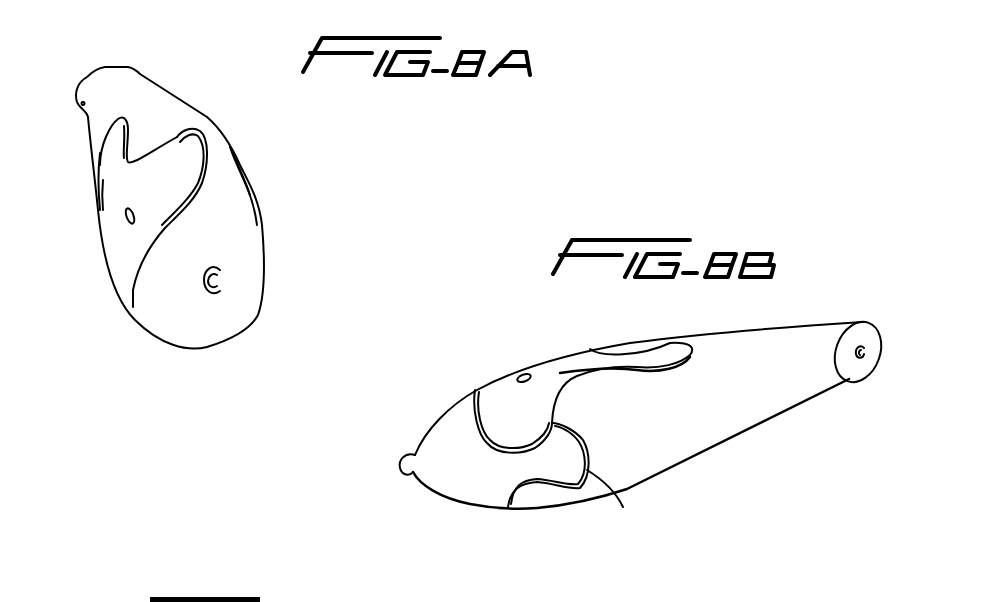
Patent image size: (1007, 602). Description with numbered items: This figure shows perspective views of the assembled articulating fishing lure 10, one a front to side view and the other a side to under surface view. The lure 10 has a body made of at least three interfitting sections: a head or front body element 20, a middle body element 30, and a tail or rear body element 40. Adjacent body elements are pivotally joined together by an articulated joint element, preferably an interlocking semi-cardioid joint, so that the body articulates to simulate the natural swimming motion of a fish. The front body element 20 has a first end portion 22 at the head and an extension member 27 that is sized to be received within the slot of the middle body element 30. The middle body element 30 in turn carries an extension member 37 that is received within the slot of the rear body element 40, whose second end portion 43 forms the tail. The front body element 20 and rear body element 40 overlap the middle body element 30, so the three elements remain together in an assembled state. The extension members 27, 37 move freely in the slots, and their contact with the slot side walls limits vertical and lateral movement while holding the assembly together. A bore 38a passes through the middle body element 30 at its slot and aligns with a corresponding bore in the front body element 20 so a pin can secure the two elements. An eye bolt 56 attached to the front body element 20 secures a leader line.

In FIG. 8B, the articulating fishing lure 10 is at (460, 373).
In FIG. 8A, the front body element 20 is at (203, 335).
In FIG. 8B, the first end portion 22 is at (430, 487).
In FIG. 8A, the extension member 27 is at (215, 143).
In FIG. 8B, the extension member 27 is at (575, 463).
In FIG. 8A, the middle body element 30 is at (247, 183).
In FIG. 8B, the middle body element 30 is at (565, 367).
In FIG. 8A, the extension member 37 is at (110, 155).
In FIG. 8B, the extension member 37 is at (673, 347).
In FIG. 8A, the bore 38a is at (127, 225).
In FIG. 8B, the bore 38a is at (519, 373).
In FIG. 8A, the rear body element 40 is at (167, 100).
In FIG. 8B, the rear body element 40 is at (797, 345).
In FIG. 8A, the second end portion 43 is at (102, 67).
In FIG. 8B, the second end portion 43 is at (860, 370).
In FIG. 8A, the eye bolt 56 is at (222, 282).
In FIG. 8B, the eye bolt 56 is at (399, 459).